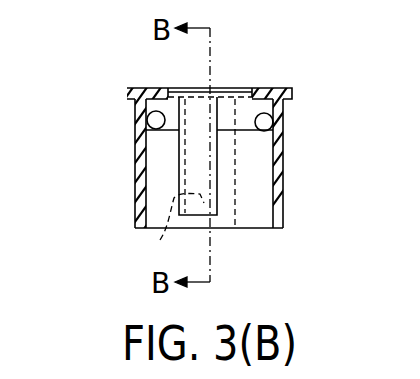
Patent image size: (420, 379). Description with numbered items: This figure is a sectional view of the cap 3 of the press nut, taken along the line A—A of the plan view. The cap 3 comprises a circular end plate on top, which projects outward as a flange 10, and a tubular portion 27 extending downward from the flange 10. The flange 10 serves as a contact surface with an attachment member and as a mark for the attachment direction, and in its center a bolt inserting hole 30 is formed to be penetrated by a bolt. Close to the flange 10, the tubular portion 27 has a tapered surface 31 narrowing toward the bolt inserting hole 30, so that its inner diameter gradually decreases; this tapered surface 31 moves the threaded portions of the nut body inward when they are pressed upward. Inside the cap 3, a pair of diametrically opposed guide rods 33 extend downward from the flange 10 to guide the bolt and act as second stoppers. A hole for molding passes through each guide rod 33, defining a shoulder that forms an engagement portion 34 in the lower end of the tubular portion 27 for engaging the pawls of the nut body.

The cap 3 is at (302, 94).
The flange 10 is at (127, 89).
The tubular portion 27 is at (283, 187).
The bolt inserting hole 30 is at (178, 88).
The tapered surface 31 is at (152, 129).
The guide rod 33 is at (198, 172).
The engagement portion 34 is at (160, 240).